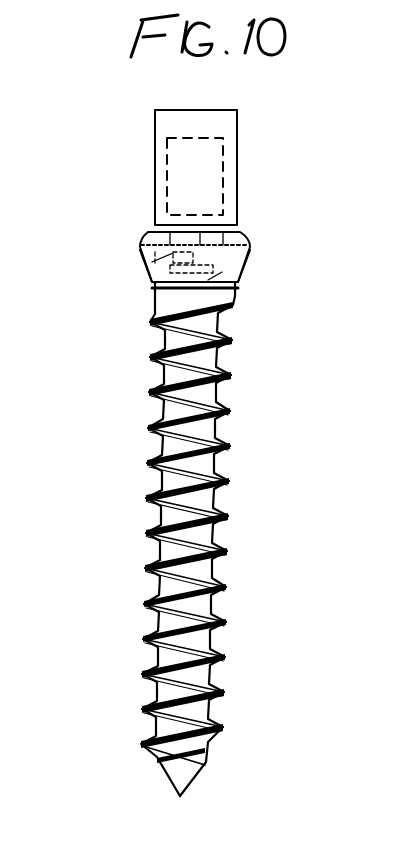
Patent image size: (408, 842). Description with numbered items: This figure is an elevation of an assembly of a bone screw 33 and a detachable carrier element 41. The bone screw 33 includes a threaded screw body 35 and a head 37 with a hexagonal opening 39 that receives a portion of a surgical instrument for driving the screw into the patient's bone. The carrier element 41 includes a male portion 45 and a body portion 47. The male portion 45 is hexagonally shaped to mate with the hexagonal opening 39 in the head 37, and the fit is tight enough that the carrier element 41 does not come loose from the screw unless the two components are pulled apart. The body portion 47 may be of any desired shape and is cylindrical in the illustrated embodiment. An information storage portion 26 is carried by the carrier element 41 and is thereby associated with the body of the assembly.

The information storage portion 26 is at (205, 167).
The bone screw 33 is at (232, 340).
The threaded screw body 35 is at (217, 397).
The head 37 is at (232, 263).
The hexagonal opening 39 is at (141, 267).
The carrier element 41 is at (158, 178).
The male portion 45 is at (128, 247).
The body portion 47 is at (168, 122).